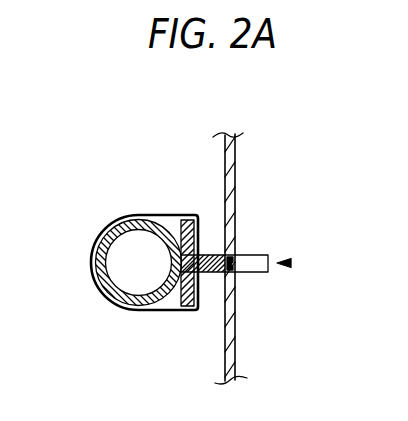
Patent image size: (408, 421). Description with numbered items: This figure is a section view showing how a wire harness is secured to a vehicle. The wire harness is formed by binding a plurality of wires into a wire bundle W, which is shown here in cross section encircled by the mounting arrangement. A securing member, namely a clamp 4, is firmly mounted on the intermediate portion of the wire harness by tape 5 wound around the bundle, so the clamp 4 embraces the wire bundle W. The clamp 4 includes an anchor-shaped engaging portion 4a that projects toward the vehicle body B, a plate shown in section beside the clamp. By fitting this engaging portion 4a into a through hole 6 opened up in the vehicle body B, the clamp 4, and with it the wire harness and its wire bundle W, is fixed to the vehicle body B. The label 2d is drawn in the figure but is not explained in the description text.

The tape 5 is at (165, 215).
The holding ring portion 2d is at (99, 236).
The wire bundle W is at (125, 270).
The clamp 4 is at (184, 310).
The vehicle body B is at (237, 177).
The through hole 6 is at (252, 257).
The engaging portion 4a is at (290, 263).